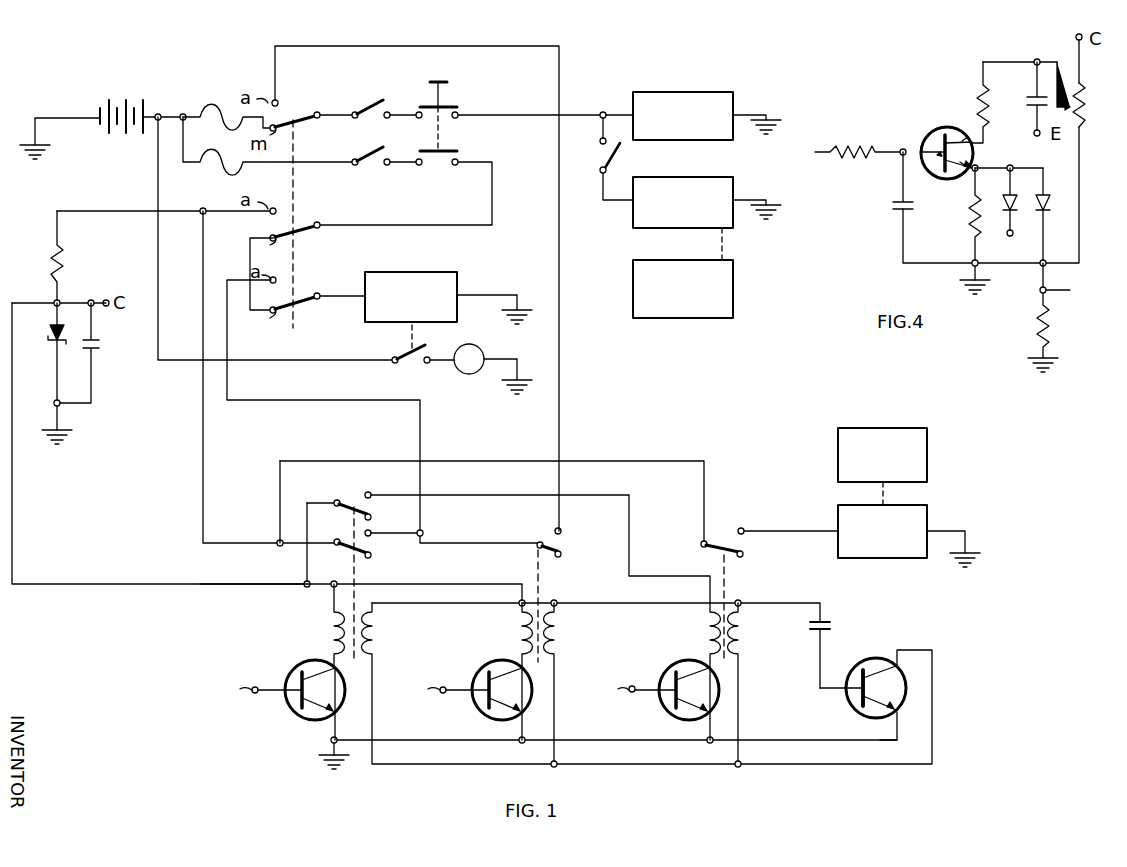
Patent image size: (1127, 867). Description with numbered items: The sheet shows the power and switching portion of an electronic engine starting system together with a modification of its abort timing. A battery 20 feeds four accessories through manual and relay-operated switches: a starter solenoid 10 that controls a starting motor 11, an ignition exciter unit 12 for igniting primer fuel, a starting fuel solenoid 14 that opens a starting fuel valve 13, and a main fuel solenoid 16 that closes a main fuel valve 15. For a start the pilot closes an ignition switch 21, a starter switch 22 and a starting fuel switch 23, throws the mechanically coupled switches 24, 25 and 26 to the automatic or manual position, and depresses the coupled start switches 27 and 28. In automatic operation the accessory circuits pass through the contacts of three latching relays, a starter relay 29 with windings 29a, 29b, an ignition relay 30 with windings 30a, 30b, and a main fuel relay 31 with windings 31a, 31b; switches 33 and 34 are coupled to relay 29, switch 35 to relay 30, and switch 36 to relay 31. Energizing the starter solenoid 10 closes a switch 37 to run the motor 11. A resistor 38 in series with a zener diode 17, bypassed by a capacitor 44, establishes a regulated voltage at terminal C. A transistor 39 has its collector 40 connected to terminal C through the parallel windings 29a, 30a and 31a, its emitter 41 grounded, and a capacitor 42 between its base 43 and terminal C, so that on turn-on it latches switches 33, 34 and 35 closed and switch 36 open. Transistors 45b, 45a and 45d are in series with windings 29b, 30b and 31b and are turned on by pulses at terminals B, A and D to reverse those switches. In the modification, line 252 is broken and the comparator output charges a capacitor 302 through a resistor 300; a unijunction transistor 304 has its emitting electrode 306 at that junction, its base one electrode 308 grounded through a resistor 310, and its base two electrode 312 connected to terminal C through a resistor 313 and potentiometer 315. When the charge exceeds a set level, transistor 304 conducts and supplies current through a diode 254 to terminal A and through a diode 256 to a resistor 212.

In FIG. 1, the starter solenoid 10 is at (404, 270).
In FIG. 1, the starting motor 11 is at (467, 375).
In FIG. 1, the ignition exciter unit 12 is at (690, 92).
In FIG. 1, the starting fuel valve 13 is at (653, 260).
In FIG. 1, the starting fuel solenoid 14 is at (690, 177).
In FIG. 1, the main fuel valve 15 is at (838, 452).
In FIG. 1, the main fuel solenoid 16 is at (838, 508).
In FIG. 1, the zener diode 17 is at (53, 342).
In FIG. 1, the battery 20 is at (146, 110).
In FIG. 1, the ignition switch 21 is at (374, 100).
In FIG. 1, the starter switch 22 is at (374, 148).
In FIG. 1, the starting fuel switch 23 is at (617, 156).
In FIG. 1, the automatic/manual switch 24 is at (312, 112).
In FIG. 1, the automatic/manual switch 25 is at (300, 240).
In FIG. 1, the automatic/manual switch 26 is at (296, 304).
In FIG. 1, the start switch 27 is at (428, 104).
In FIG. 1, the start switch 28 is at (428, 150).
In FIG. 1, the starter relay 29 is at (413, 674).
In FIG. 1, the starter relay winding 29a is at (382, 650).
In FIG. 1, the starter relay winding 29b is at (330, 638).
In FIG. 1, the ignition relay 30 is at (537, 683).
In FIG. 1, the ignition relay winding 30a is at (560, 648).
In FIG. 1, the ignition relay winding 30b is at (518, 642).
In FIG. 1, the main fuel relay 31 is at (723, 683).
In FIG. 1, the main fuel relay winding 31a is at (743, 646).
In FIG. 1, the main fuel relay winding 31b is at (706, 645).
In FIG. 1, the relay switch 33 is at (378, 552).
In FIG. 1, the relay switch 34 is at (368, 510).
In FIG. 1, the relay switch 35 is at (538, 553).
In FIG. 1, the relay switch 36 is at (720, 550).
In FIG. 1, the motor switch 37 is at (393, 357).
In FIG. 1, the resistor 38 is at (64, 268).
In FIG. 1, the transistor 39 is at (876, 660).
In FIG. 1, the collector 40 is at (870, 678).
In FIG. 1, the emitter 41 is at (878, 748).
In FIG. 1, the capacitor 42 is at (830, 625).
In FIG. 1, the transistor base 43 is at (838, 690).
In FIG. 1, the capacitor 44 is at (94, 352).
In FIG. 1, the transistor 45a is at (490, 718).
In FIG. 1, the transistor 45b is at (305, 720).
In FIG. 1, the transistor 45d is at (680, 718).
In FIG. 4, the resistor 212 is at (1040, 318).
In FIG. 4, the line 252 is at (834, 160).
In FIG. 4, the diode 254 is at (1006, 202).
In FIG. 4, the diode 256 is at (1060, 205).
In FIG. 4, the resistor 300 is at (858, 158).
In FIG. 4, the capacitor 302 is at (898, 212).
In FIG. 4, the unijunction transistor 304 is at (927, 138).
In FIG. 4, the emitting electrode 306 is at (939, 180).
In FIG. 4, the base one electrode 308 is at (970, 156).
In FIG. 4, the resistor 310 is at (970, 215).
In FIG. 4, the base two electrode 312 is at (955, 128).
In FIG. 4, the resistor 313 is at (978, 96).
In FIG. 4, the potentiometer 315 is at (1072, 112).